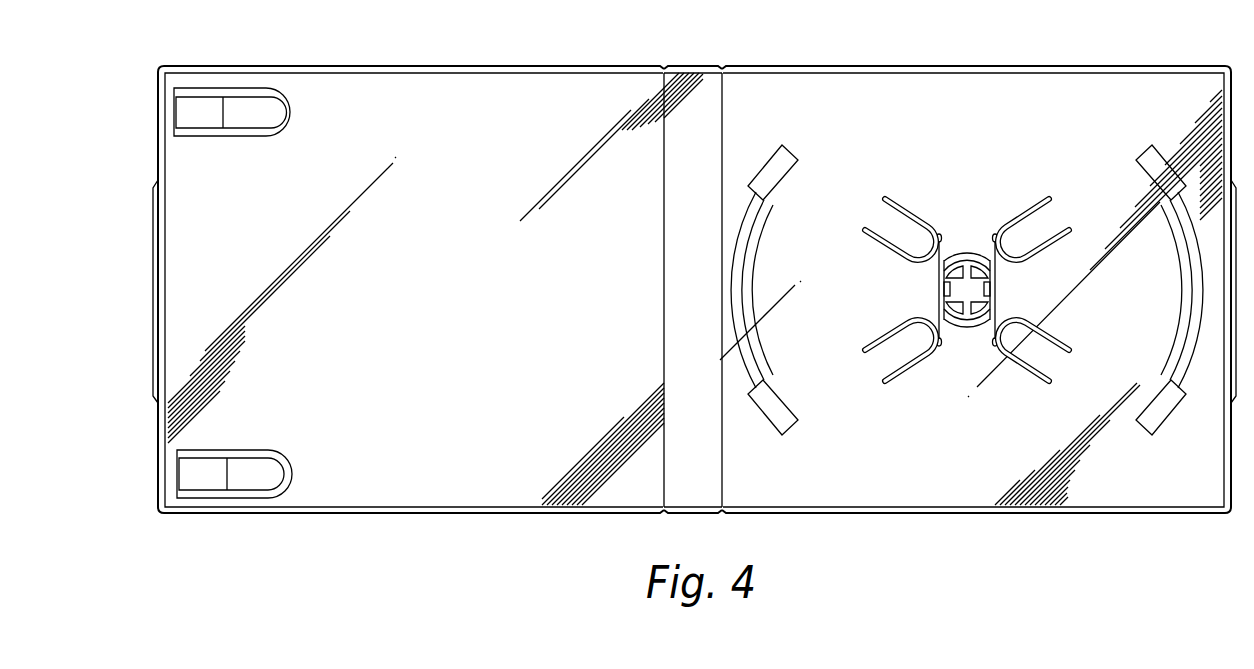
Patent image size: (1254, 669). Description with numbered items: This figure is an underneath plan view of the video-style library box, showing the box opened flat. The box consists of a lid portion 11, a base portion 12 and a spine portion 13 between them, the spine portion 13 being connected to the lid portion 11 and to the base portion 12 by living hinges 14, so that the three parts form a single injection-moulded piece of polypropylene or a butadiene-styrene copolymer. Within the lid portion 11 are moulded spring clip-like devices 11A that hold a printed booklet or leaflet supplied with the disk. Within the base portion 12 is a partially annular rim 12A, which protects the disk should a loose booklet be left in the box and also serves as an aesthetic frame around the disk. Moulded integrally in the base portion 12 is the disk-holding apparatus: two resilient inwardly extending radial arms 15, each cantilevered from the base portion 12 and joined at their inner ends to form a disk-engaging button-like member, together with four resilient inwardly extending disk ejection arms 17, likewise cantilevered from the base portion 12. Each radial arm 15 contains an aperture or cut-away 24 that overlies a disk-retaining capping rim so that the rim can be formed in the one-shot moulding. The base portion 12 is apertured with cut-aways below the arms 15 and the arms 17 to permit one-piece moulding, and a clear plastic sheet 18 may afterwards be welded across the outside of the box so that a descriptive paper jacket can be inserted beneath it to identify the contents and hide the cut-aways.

The lid portion 11 is at (391, 58).
The spring clip-like devices 11A is at (207, 107).
The base portion 12 is at (1020, 56).
The partially annular rim 12A is at (772, 170).
The spine portion 13 is at (705, 58).
The living hinges 14 is at (722, 178).
The resilient radial arms 15 is at (962, 243).
The disk ejection arms 17 is at (893, 226).
The clear plastic sheet 18 is at (1095, 485).
The aperture or cut-away 24 is at (978, 255).